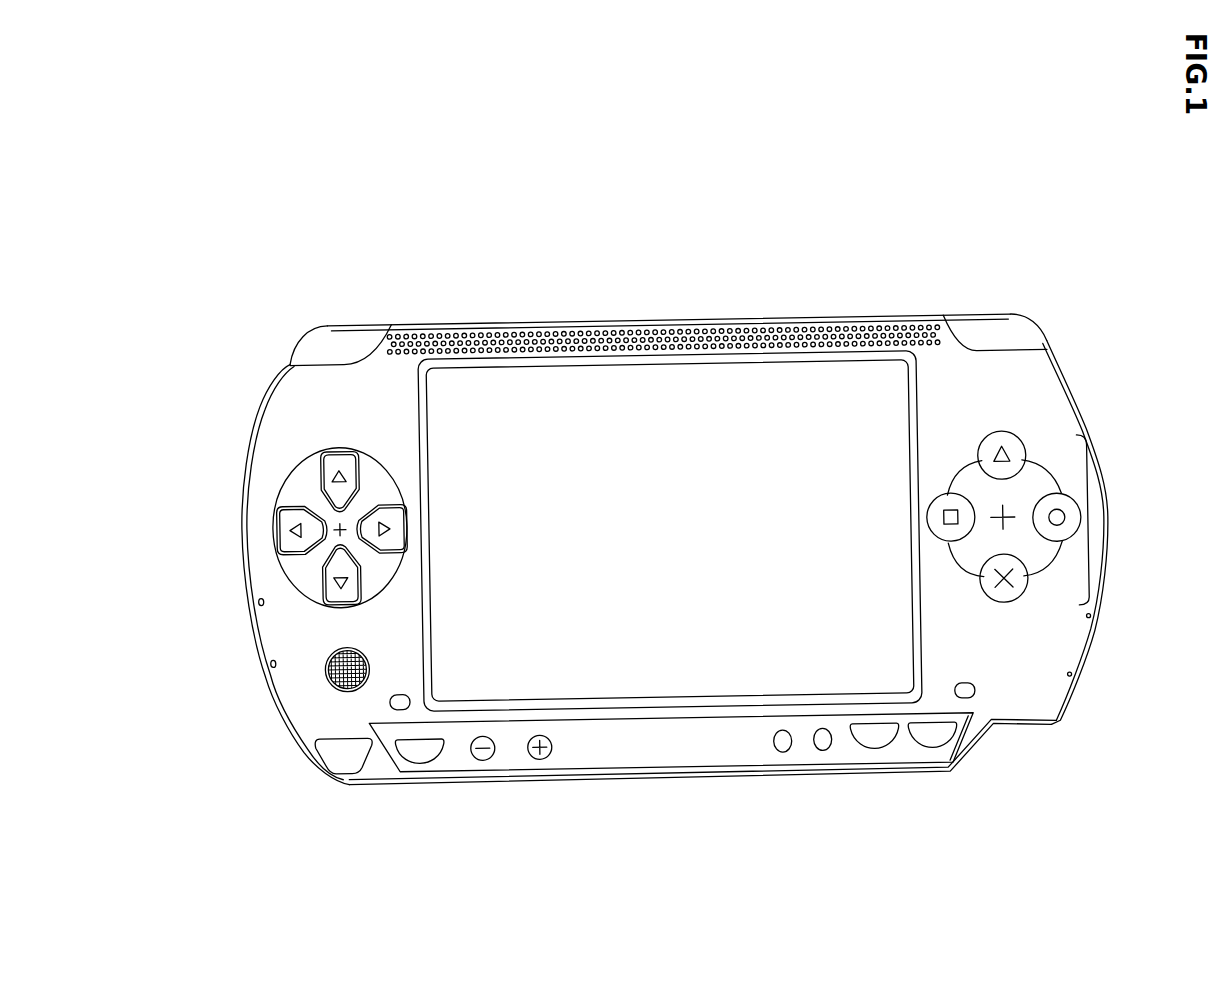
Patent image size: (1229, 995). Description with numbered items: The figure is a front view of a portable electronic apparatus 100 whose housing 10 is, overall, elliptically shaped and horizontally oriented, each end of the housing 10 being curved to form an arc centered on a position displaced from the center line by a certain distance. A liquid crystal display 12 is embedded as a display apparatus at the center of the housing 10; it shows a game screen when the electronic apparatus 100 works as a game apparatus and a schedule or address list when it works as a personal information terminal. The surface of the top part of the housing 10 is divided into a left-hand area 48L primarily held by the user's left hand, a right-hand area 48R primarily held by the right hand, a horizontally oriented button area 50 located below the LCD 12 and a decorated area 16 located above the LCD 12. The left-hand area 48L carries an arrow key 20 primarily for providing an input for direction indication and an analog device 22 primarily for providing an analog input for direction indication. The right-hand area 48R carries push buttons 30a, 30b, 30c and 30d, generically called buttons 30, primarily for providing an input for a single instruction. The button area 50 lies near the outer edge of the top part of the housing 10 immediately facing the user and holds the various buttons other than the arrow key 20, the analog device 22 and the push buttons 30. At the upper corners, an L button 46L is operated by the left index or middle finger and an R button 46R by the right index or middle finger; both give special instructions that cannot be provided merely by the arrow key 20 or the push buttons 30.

The electronic apparatus 100 is at (1013, 188).
The housing 10 is at (1057, 384).
The liquid crystal display (LCD) 12 is at (810, 378).
The decorated area 16 is at (445, 346).
The arrow key 20 is at (293, 572).
The analog device 22 is at (320, 678).
The push buttons 30 is at (1088, 517).
The push button 30a is at (1065, 492).
The push button 30b is at (1007, 430).
The push button 30c is at (940, 490).
The push button 30d is at (987, 587).
The L button 46L is at (362, 336).
The R button 46R is at (997, 325).
The left-hand area 48L is at (290, 397).
The right-hand area 48R is at (950, 357).
The button area 50 is at (678, 758).